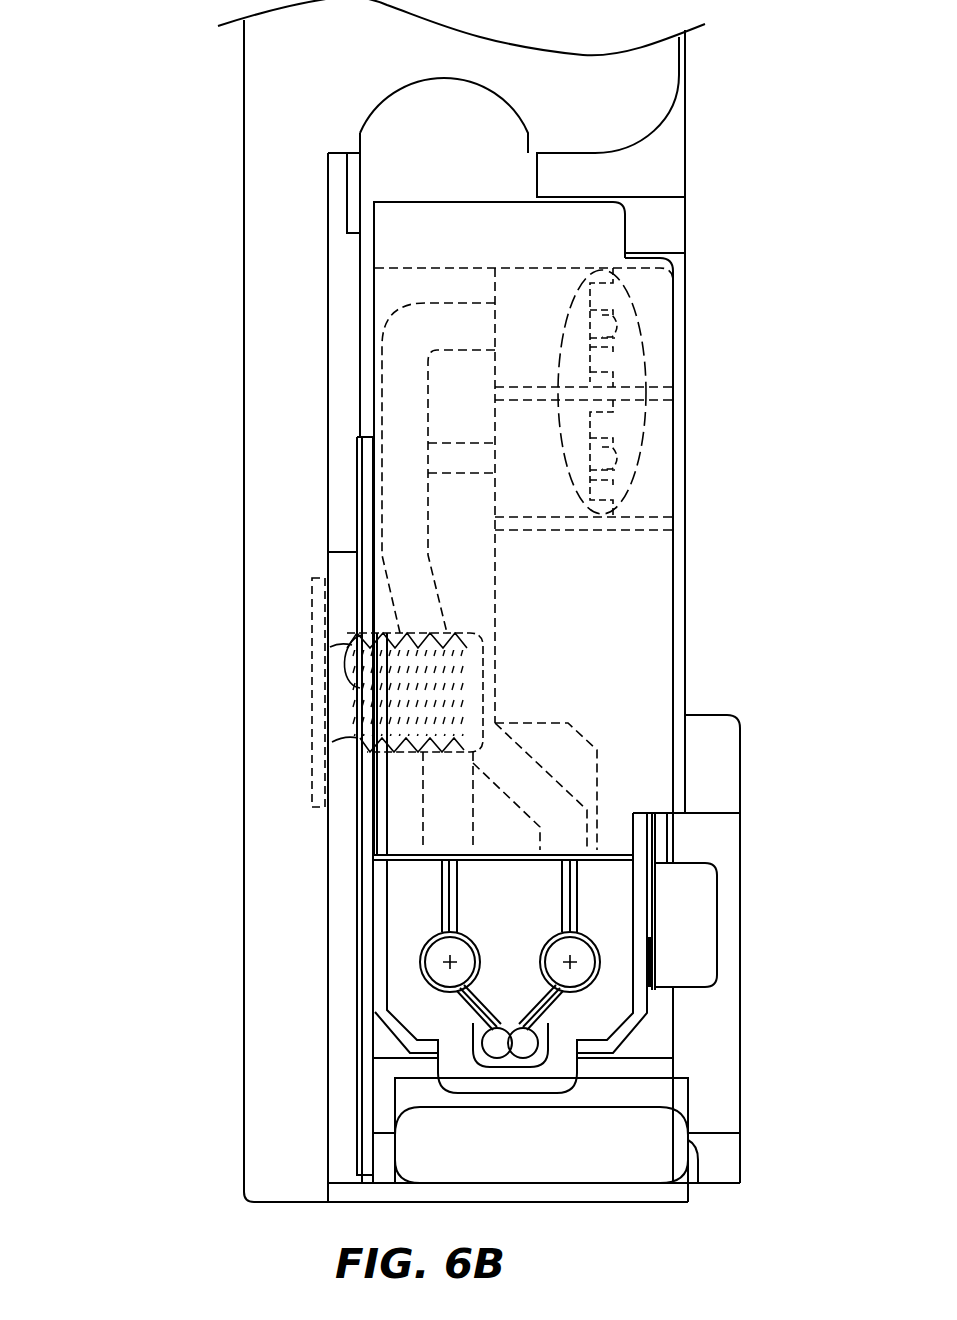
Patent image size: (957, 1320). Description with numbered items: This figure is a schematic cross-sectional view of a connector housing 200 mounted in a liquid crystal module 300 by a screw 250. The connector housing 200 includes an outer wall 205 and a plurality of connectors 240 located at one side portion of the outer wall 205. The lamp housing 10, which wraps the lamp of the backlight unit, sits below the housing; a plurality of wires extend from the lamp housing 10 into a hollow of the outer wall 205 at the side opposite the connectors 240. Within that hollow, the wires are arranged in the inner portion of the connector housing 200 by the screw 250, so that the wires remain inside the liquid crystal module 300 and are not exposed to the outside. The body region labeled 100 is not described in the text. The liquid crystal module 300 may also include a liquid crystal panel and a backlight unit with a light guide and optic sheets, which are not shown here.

The lamp housing 10 is at (608, 897).
The main body 100 is at (293, 393).
The connector housing 200 is at (675, 580).
The outer wall 205 is at (360, 303).
The connectors 240 is at (648, 345).
The screw 250 is at (312, 692).
The liquid crystal module 300 is at (160, 510).